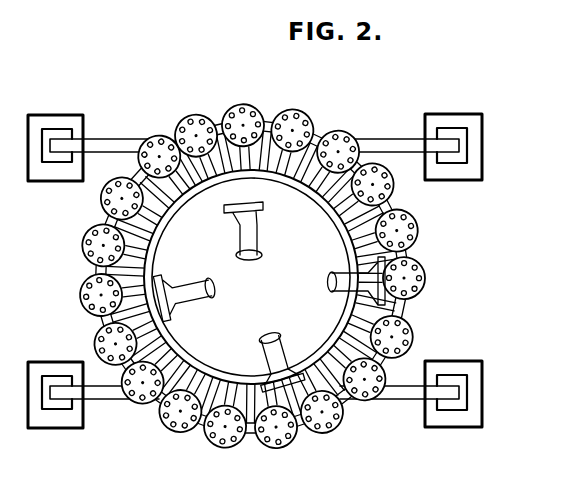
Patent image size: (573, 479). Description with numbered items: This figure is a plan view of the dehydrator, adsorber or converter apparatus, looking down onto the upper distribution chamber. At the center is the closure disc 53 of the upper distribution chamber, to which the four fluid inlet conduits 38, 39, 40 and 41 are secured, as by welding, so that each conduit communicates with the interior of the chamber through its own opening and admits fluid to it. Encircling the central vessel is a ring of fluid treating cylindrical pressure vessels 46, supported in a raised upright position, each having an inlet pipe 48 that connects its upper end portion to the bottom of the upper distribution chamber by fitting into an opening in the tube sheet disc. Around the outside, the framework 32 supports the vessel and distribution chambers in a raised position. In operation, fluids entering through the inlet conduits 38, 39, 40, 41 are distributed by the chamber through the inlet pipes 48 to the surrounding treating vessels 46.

The framework 32 is at (484, 158).
The fluid treating cylindrical pressure vessels 46 is at (410, 225).
The closure disc 53 is at (297, 293).
The fluid inlet conduit 41 is at (251, 232).
The fluid inlet conduit 40 is at (197, 297).
The fluid inlet conduit 38 is at (346, 293).
The fluid inlet conduit 39 is at (281, 362).
The inlet pipe 48 is at (236, 388).